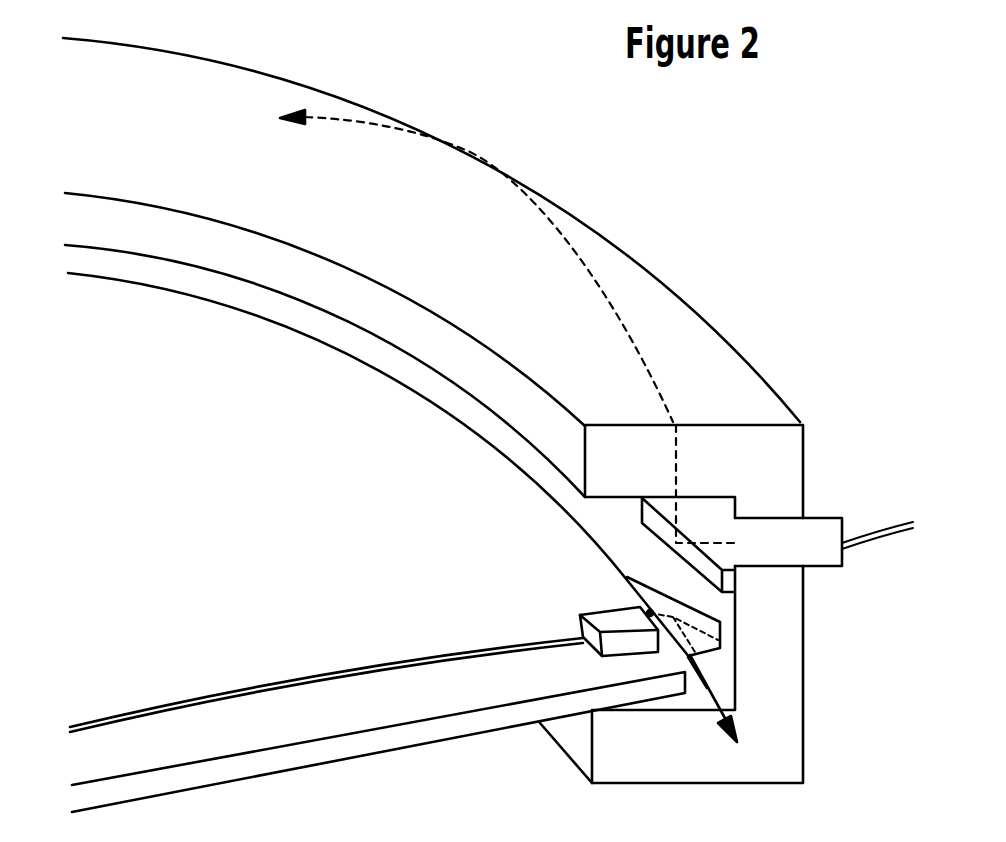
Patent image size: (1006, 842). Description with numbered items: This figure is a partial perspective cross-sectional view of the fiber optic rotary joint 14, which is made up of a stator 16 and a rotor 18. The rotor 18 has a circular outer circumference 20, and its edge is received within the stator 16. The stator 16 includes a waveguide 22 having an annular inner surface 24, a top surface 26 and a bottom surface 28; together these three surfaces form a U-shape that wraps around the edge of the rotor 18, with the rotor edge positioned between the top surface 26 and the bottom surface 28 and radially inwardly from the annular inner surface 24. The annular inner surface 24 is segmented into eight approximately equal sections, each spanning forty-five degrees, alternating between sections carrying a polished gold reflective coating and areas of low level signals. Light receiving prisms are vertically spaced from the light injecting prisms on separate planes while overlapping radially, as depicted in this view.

The fiber optic rotary joint 14 is at (823, 372).
The stator 16 is at (668, 291).
The rotor 18 is at (274, 547).
The circular outer circumference 20 is at (592, 529).
The waveguide 22 is at (778, 627).
The annular inner surface 24 is at (733, 668).
The top surface 26 is at (628, 502).
The bottom surface 28 is at (706, 705).